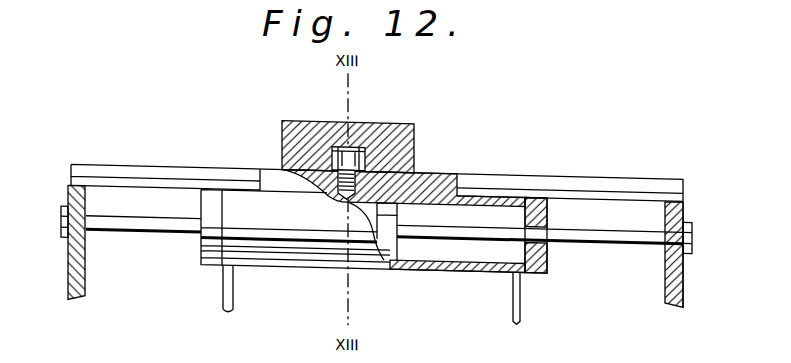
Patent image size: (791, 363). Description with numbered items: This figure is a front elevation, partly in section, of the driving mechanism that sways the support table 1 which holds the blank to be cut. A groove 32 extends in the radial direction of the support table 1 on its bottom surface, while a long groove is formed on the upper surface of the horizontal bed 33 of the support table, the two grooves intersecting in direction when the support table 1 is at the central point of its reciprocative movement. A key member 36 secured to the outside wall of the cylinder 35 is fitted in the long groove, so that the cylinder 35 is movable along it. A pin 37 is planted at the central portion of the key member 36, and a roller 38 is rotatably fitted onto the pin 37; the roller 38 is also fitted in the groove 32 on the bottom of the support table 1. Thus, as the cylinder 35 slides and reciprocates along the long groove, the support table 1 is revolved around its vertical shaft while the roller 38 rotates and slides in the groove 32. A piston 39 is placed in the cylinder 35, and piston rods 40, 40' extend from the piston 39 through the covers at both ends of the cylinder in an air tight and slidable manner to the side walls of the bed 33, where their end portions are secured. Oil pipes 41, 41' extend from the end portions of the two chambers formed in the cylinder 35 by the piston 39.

The support table 1 is at (358, 128).
The groove 32 is at (336, 146).
The horizontal bed 33 is at (600, 176).
The cylinder 35 is at (323, 260).
The key member 36 is at (438, 173).
The pin 37 is at (328, 193).
The roller 38 is at (355, 149).
The piston 39 is at (392, 268).
The piston rod 40 is at (143, 249).
The piston rod 40' is at (540, 260).
The oil pipe 41 is at (206, 290).
The oil pipe 41' is at (540, 298).